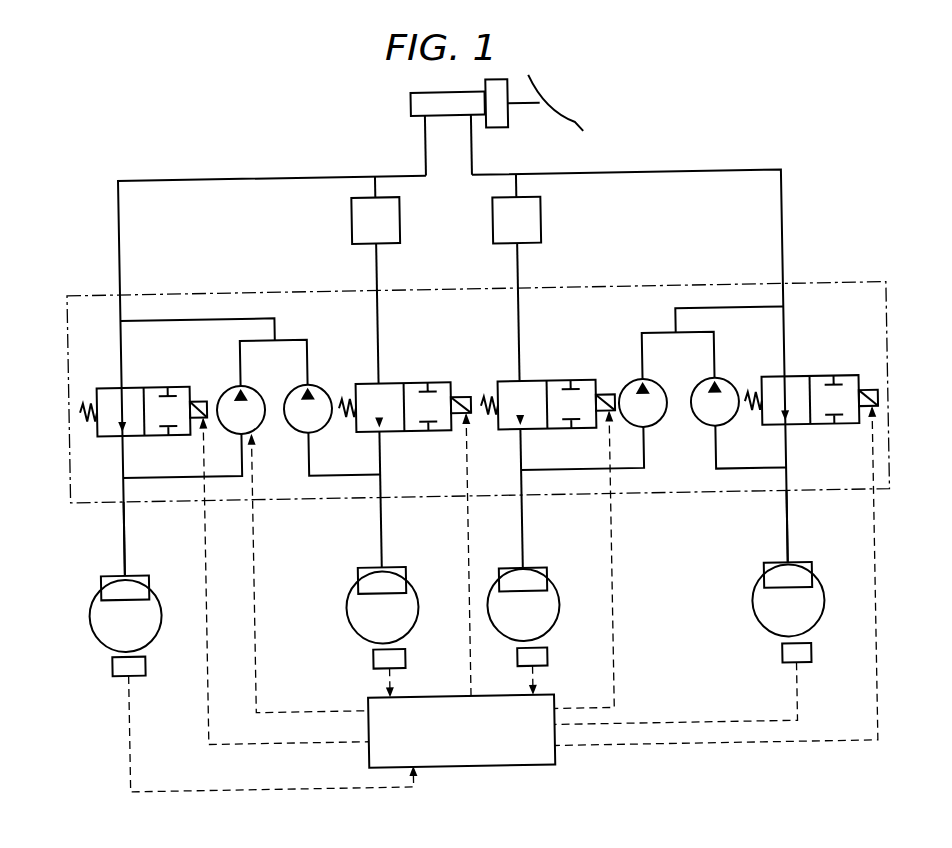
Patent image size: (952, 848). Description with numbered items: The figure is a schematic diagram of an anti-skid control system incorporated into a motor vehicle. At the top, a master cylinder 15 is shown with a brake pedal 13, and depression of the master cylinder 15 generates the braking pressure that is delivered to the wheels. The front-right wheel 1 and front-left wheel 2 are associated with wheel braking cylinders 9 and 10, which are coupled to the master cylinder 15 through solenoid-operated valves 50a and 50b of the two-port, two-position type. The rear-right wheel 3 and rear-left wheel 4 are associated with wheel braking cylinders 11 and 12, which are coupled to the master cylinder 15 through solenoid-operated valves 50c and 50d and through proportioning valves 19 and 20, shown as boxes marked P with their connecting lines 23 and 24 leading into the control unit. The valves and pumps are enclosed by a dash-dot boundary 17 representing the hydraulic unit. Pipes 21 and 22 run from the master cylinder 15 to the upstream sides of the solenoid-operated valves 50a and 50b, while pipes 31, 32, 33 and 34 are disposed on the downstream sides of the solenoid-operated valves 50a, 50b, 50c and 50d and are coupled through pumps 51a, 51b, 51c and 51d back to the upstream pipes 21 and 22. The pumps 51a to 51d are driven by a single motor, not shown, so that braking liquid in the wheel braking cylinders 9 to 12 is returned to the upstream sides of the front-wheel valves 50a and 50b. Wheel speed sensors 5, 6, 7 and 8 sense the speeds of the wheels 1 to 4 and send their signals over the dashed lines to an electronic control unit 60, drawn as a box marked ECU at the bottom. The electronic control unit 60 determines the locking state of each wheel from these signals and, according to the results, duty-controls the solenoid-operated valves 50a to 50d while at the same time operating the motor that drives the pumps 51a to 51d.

The front-right wheel 1 is at (153, 612).
The front-left wheel 2 is at (817, 613).
The rear-right wheel 3 is at (552, 611).
The rear-left wheel 4 is at (410, 613).
The wheel speed sensor 5 is at (137, 666).
The wheel speed sensor 6 is at (803, 665).
The wheel speed sensor 7 is at (539, 663).
The wheel speed sensor 8 is at (397, 664).
The wheel braking cylinder 9 is at (131, 576).
The wheel braking cylinder 10 is at (803, 575).
The wheel braking cylinder 11 is at (535, 575).
The wheel braking cylinder 12 is at (388, 573).
The brake pedal 13 is at (536, 98).
The master cylinder 15 is at (412, 110).
The hydraulic pressure control unit 17 is at (884, 313).
The proportioning valve 19 is at (540, 215).
The proportioning valve 20 is at (399, 216).
The pipe 21 is at (118, 229).
The pipe 22 is at (782, 212).
The brake fluid line 23 is at (516, 275).
The brake fluid line 24 is at (375, 273).
The pipe 31 is at (118, 528).
The pipe 32 is at (781, 534).
The pipe 33 is at (516, 535).
The pipe 34 is at (375, 535).
The solenoid-operated valve 50a is at (138, 388).
The solenoid-operated valve 50b is at (806, 388).
The solenoid-operated valve 50c is at (548, 388).
The solenoid-operated valve 50d is at (412, 388).
The pump 51a is at (250, 393).
The pump 51b is at (728, 393).
The pump 51c is at (654, 393).
The pump 51d is at (318, 393).
The electronic control unit 60 is at (498, 772).